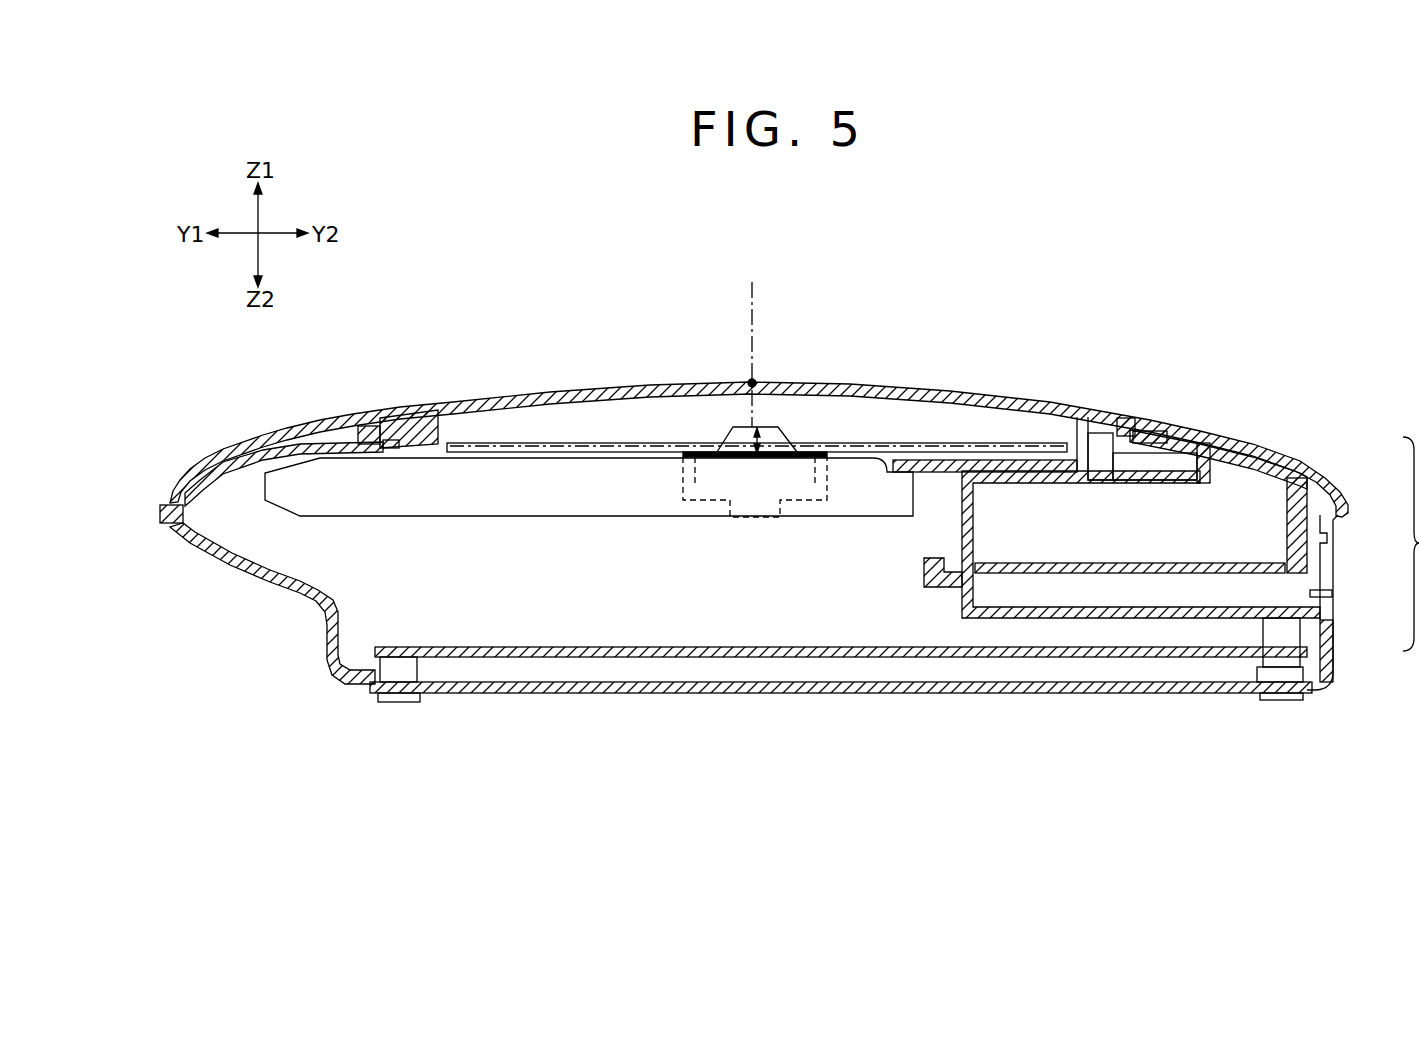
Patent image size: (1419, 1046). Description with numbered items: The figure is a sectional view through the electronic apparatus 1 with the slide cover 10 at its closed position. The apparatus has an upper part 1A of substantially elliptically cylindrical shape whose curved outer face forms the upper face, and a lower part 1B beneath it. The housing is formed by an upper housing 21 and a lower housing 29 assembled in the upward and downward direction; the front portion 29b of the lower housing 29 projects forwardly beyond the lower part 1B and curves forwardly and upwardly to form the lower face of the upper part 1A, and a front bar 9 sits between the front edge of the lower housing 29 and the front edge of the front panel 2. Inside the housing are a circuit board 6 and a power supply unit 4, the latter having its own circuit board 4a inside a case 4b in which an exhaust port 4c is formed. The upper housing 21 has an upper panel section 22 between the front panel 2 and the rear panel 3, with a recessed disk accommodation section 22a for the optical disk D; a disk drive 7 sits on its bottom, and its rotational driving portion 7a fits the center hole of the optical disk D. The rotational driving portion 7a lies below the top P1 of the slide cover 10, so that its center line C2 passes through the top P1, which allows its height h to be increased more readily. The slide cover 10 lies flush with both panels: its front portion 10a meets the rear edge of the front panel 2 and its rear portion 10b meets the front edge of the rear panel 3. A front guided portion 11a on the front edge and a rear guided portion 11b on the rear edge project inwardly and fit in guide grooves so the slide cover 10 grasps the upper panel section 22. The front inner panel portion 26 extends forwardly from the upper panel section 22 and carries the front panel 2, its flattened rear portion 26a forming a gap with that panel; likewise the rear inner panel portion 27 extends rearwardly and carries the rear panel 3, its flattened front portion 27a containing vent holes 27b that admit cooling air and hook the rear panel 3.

The electronic apparatus 1 is at (862, 360).
The upper part 1A is at (253, 598).
The lower part 1B is at (318, 652).
The front panel 2 is at (264, 440).
The rear panel 3 is at (1222, 443).
The power supply unit 4 is at (1030, 623).
The circuit board 4a is at (1053, 562).
The case 4b is at (1103, 618).
The exhaust port 4c is at (1332, 545).
The circuit board 6 is at (785, 648).
The disk drive 7 is at (553, 517).
The rotational driving portion 7a is at (784, 438).
The front bar 9 is at (158, 513).
The slide cover 10 is at (668, 383).
The front portion of the slide cover 10a is at (424, 412).
The rear portion of the slide cover 10b is at (1064, 400).
The front guided portion 11a is at (386, 448).
The rear guided portion 11b is at (1133, 440).
The upper housing 21 is at (1305, 460).
The upper panel section 22 is at (1106, 410).
The disk accommodation section 22a is at (944, 460).
The front inner panel portion 26 is at (222, 462).
The rear portion of the front inner panel portion 26a is at (352, 428).
The rear inner panel portion 27 is at (1272, 460).
The front portion of the rear inner panel portion 27a is at (1168, 428).
The vent hole 27b is at (1180, 450).
The lower housing 29 is at (1330, 637).
The front portion of the lower housing 29b is at (200, 553).
The optical disk D is at (524, 453).
The center line of the rotational driving portion C2 is at (759, 342).
The top of the slide cover P1 is at (754, 382).
The height h is at (748, 441).